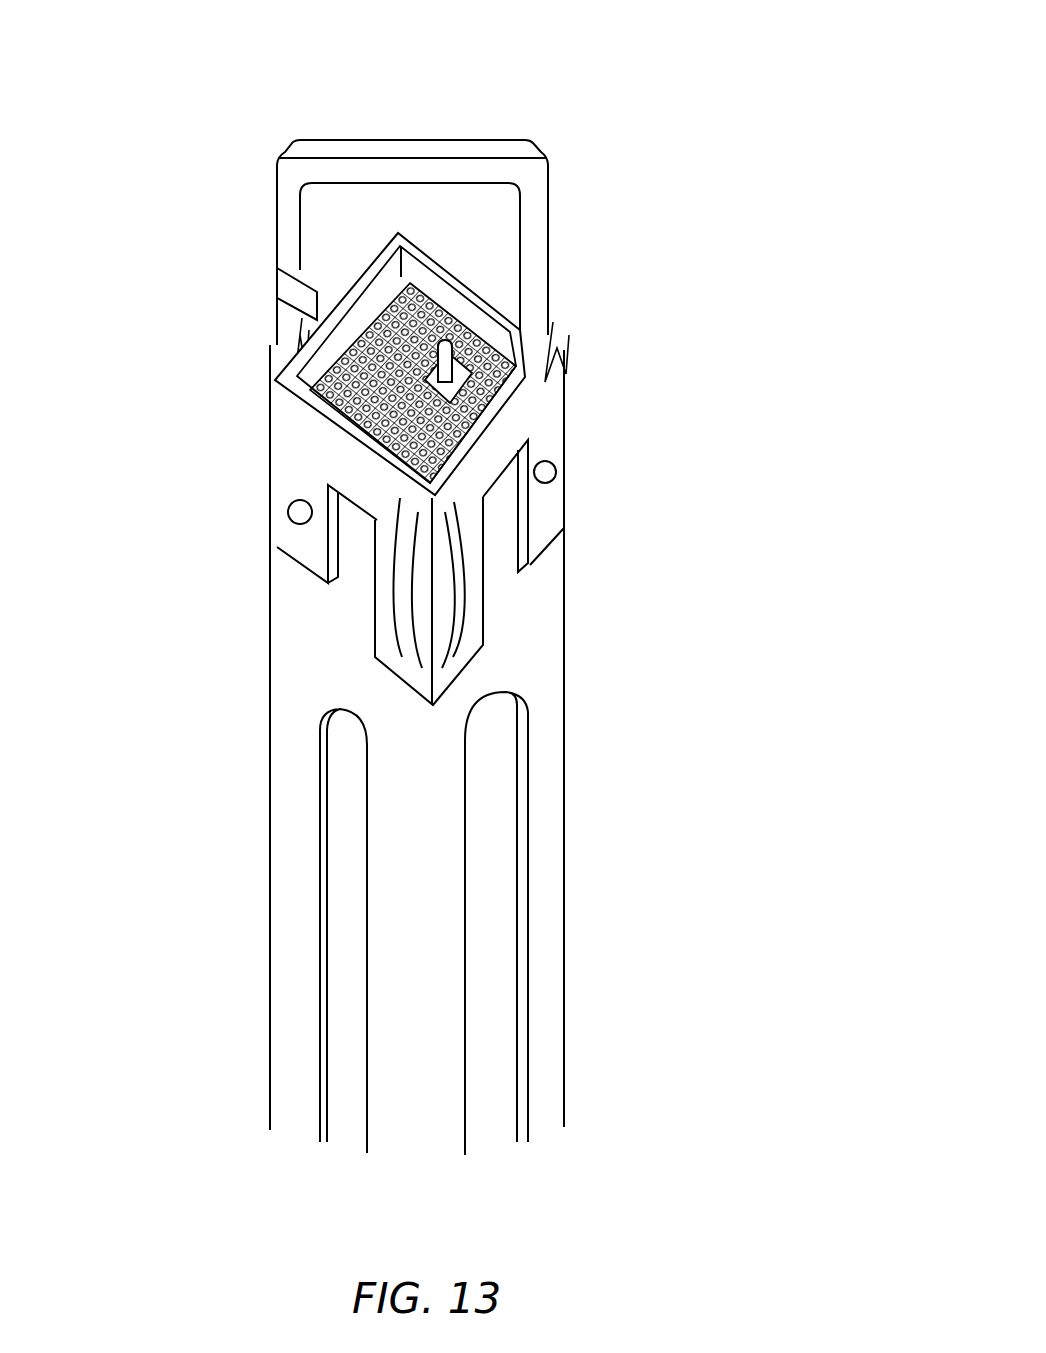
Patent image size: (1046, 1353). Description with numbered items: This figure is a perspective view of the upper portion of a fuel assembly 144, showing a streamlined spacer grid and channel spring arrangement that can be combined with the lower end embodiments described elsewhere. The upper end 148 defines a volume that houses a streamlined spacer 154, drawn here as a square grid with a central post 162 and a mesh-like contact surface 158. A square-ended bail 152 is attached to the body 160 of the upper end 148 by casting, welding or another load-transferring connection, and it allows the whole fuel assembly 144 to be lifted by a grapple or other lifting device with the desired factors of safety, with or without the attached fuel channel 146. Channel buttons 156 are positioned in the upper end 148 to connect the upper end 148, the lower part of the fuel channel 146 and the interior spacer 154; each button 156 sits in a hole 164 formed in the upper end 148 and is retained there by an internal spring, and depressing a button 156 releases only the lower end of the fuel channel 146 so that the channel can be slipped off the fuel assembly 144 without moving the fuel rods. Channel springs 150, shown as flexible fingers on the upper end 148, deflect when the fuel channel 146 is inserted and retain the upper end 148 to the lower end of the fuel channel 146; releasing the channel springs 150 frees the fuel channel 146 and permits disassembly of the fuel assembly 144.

The fuel assembly 144 is at (566, 115).
The fuel channel 146 is at (542, 651).
The upper end 148 is at (283, 428).
The channel springs 150 is at (457, 625).
The bail 152 is at (284, 176).
The streamlined spacer 154 is at (512, 413).
The channel buttons 156 is at (538, 485).
The contact mesh 158 is at (348, 348).
The body 160 is at (567, 358).
The pin 162 is at (455, 352).
The hole 164 is at (288, 512).